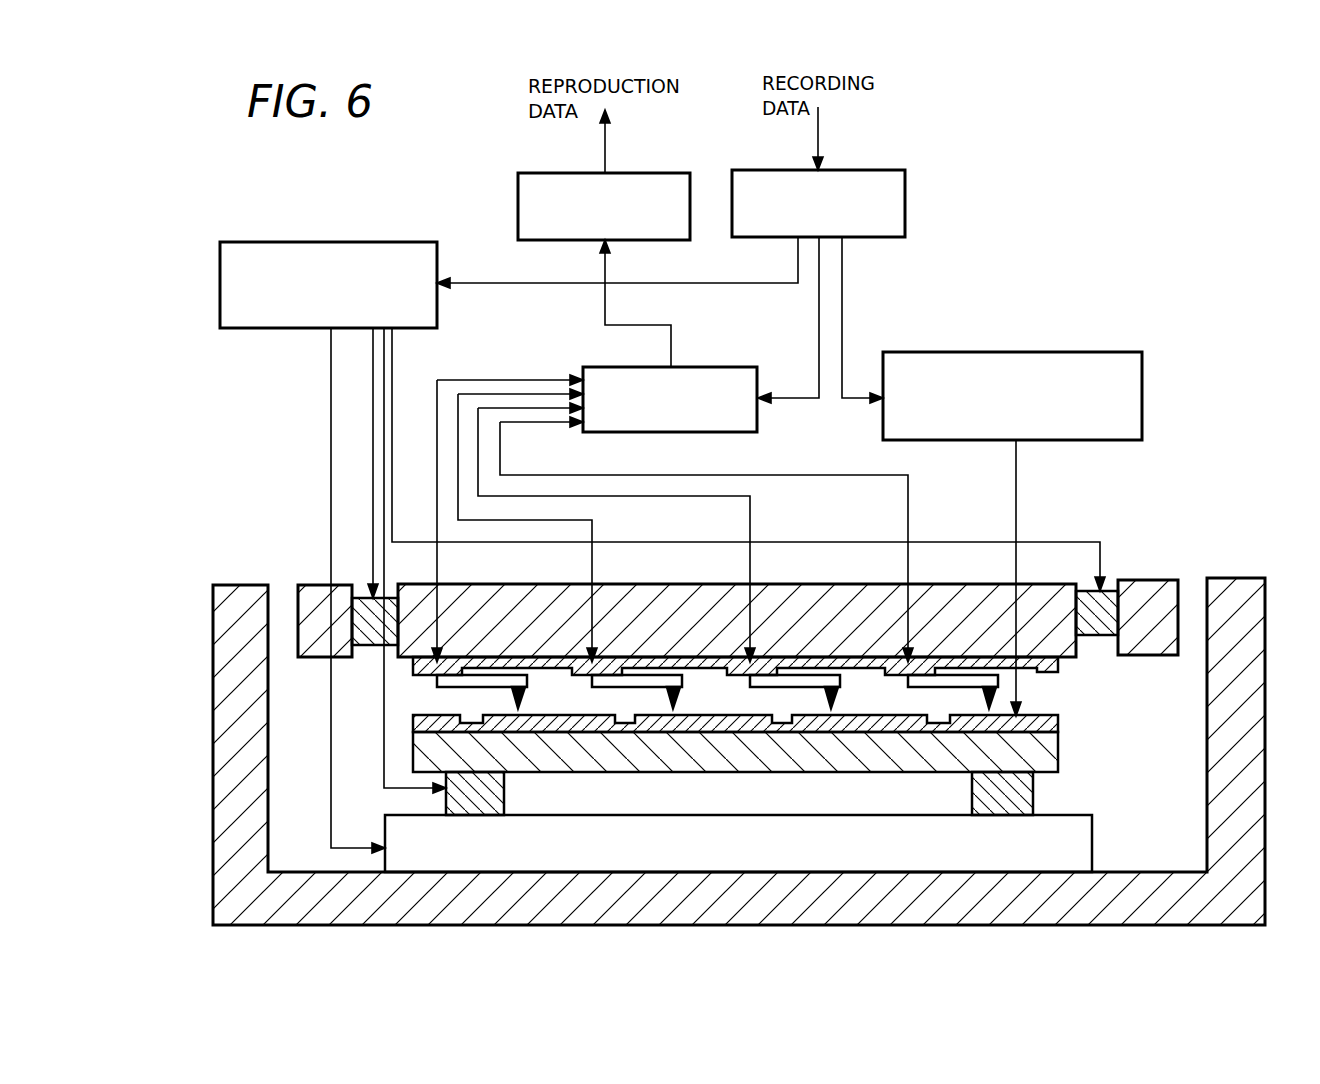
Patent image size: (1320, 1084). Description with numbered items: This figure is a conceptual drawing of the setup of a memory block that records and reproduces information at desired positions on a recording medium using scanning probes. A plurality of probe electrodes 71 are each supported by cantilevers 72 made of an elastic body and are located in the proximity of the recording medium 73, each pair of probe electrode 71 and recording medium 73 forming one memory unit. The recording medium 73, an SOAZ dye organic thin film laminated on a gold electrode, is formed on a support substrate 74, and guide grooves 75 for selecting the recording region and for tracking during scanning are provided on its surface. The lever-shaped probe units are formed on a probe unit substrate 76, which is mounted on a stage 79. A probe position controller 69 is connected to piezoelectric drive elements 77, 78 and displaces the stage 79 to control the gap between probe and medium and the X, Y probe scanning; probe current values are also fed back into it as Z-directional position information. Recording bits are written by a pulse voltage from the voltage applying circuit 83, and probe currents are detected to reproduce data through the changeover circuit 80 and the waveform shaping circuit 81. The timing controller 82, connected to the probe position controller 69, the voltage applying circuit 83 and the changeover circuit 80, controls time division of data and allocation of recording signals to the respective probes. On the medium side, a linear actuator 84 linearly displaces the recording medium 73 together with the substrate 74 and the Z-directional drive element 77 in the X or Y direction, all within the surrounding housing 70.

The probe position controller 69 is at (248, 242).
The housing 70 is at (1262, 585).
The probe electrode 71 is at (685, 700).
The cantilever 72 is at (447, 678).
The recording medium 73 is at (1060, 717).
The support substrate 74 is at (1060, 746).
The guide groove 75 is at (937, 722).
The probe unit substrate 76 is at (862, 660).
The drive element 77 is at (1035, 800).
The drive element 78 is at (365, 608).
The stage 79 is at (1045, 584).
The changeover circuit 80 is at (727, 367).
The waveform shaping circuit 81 is at (667, 173).
The timing controller 82 is at (875, 170).
The voltage applying circuit 83 is at (1110, 352).
The linear actuator 84 is at (1090, 836).